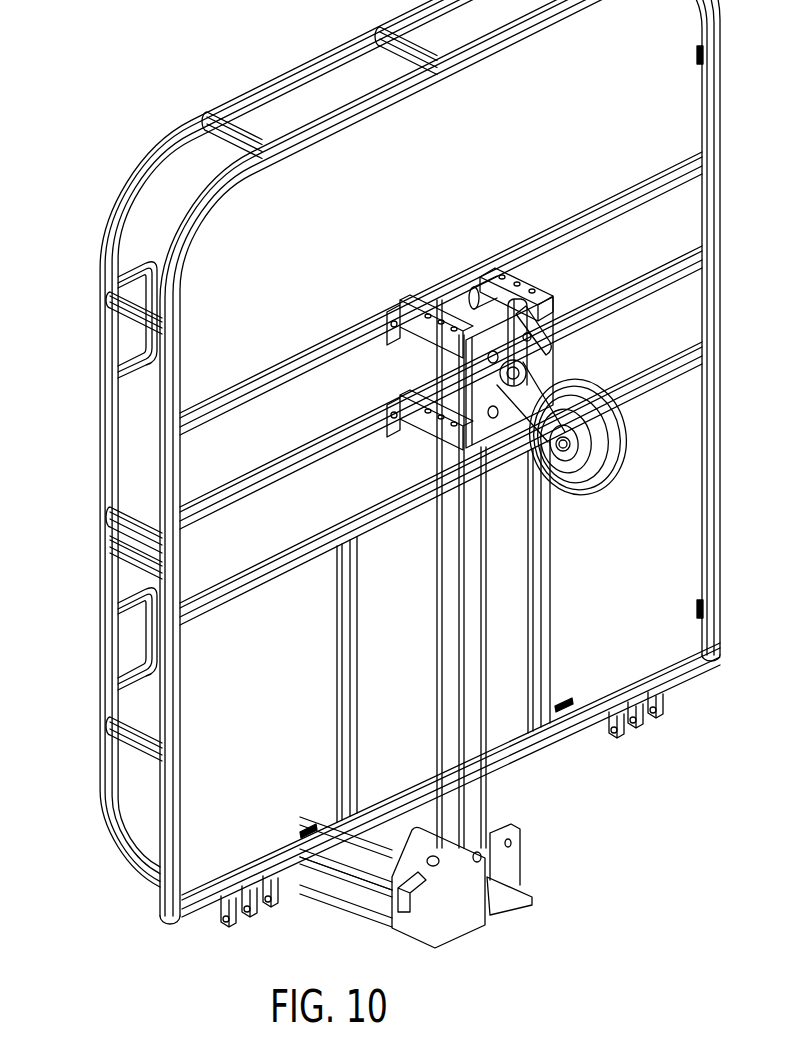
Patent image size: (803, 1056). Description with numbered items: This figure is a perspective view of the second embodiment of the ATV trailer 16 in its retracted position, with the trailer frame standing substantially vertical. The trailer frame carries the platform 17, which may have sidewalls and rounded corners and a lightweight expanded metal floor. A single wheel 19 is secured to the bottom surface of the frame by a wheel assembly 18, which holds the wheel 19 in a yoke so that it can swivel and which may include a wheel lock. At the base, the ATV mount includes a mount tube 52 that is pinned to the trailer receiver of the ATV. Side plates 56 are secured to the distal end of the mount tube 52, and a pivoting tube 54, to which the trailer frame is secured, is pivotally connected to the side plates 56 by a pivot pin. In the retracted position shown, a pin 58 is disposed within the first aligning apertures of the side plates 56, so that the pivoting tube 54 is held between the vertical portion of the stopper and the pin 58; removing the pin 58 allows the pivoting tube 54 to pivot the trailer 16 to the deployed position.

The ATV trailer 16 is at (83, 471).
The platform 17 is at (261, 801).
The wheel assembly 18 is at (562, 506).
The wheel 19 is at (597, 487).
The mount tube 52 is at (348, 885).
The pivoting tube 54 is at (456, 632).
The side plates 56 is at (448, 927).
The pin 58 is at (405, 905).